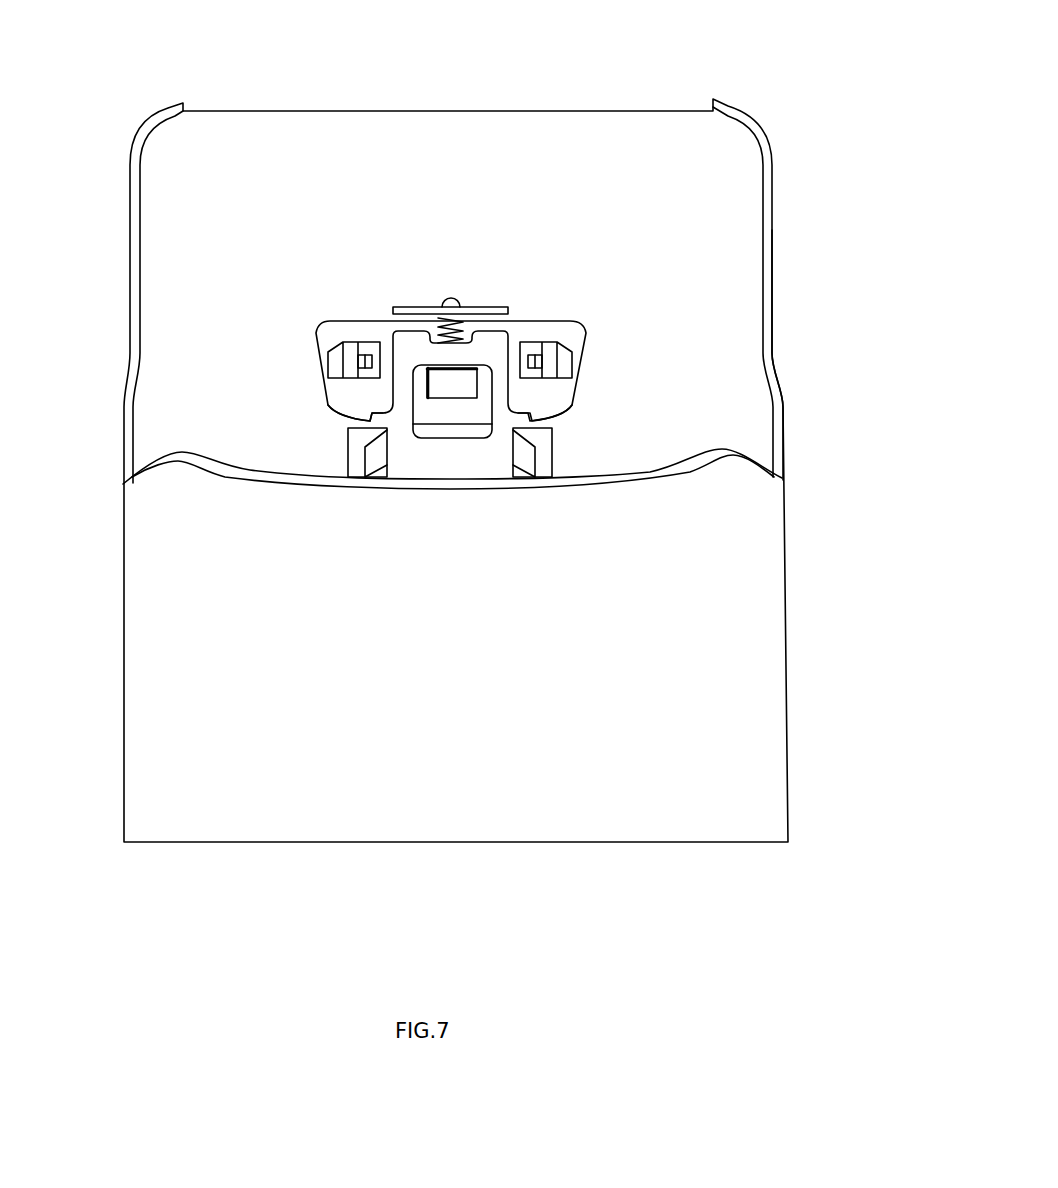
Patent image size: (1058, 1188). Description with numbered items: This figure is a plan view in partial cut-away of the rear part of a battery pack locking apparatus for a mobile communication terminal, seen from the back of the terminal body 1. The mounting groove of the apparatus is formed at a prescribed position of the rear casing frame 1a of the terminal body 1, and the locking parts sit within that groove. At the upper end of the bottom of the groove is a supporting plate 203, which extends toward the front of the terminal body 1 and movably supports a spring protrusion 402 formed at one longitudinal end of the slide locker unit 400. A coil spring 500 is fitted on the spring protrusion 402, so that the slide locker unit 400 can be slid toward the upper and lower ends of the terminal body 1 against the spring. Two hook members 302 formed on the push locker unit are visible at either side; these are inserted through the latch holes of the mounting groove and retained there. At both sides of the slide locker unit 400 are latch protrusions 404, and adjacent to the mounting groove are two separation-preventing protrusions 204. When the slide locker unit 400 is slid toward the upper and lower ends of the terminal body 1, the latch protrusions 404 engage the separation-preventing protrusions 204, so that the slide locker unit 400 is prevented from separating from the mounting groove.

The terminal body 1 is at (788, 702).
The rear casing frame 1a is at (782, 222).
The supporting plate 203 is at (393, 311).
The separation-preventing protrusions 204 is at (353, 458).
The hook members 302 is at (335, 360).
The slide locker unit 400 is at (508, 328).
The spring protrusion 402 is at (450, 297).
The latch protrusions 404 is at (368, 413).
The coil spring 500 is at (464, 333).